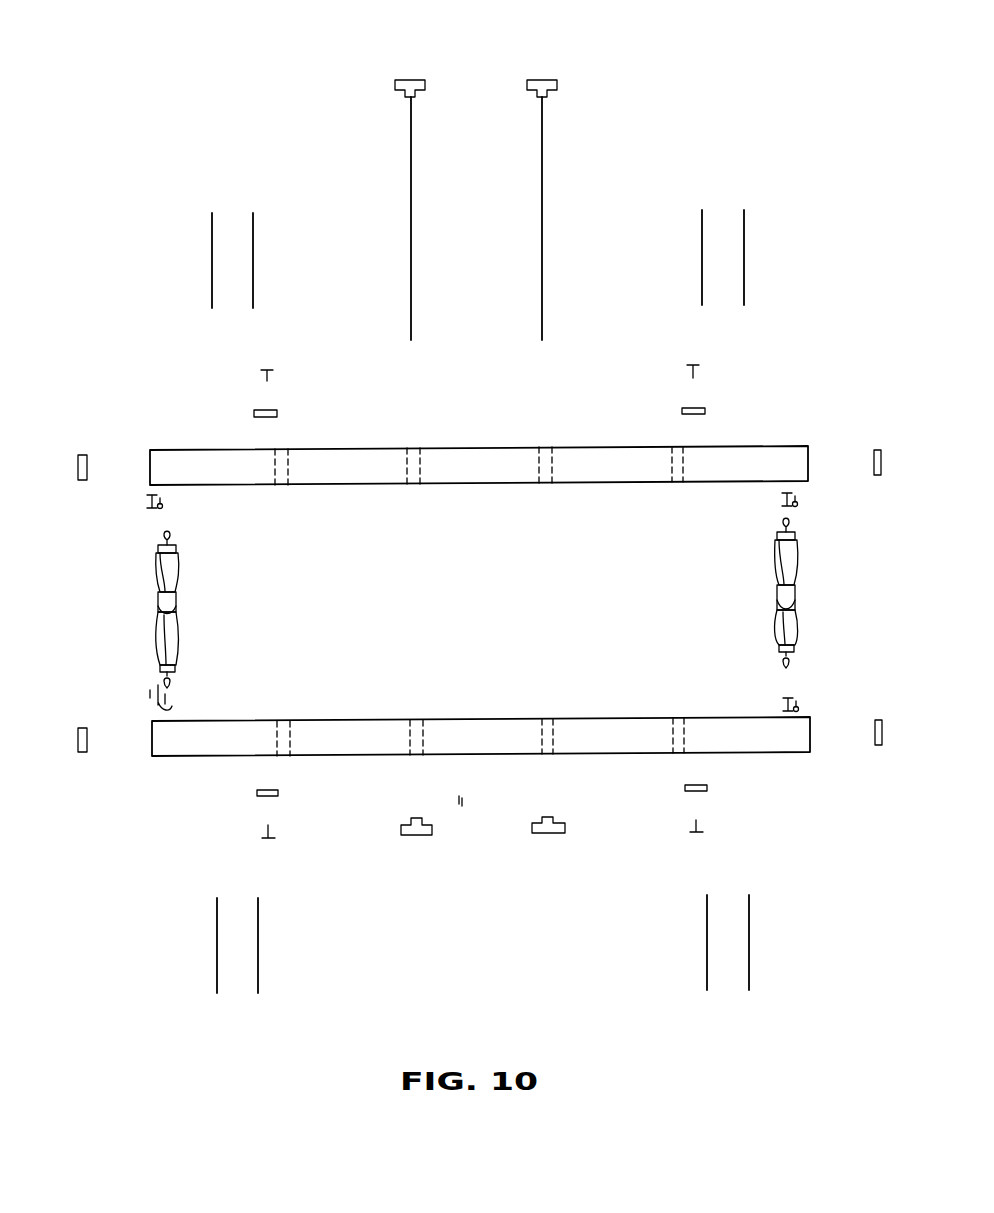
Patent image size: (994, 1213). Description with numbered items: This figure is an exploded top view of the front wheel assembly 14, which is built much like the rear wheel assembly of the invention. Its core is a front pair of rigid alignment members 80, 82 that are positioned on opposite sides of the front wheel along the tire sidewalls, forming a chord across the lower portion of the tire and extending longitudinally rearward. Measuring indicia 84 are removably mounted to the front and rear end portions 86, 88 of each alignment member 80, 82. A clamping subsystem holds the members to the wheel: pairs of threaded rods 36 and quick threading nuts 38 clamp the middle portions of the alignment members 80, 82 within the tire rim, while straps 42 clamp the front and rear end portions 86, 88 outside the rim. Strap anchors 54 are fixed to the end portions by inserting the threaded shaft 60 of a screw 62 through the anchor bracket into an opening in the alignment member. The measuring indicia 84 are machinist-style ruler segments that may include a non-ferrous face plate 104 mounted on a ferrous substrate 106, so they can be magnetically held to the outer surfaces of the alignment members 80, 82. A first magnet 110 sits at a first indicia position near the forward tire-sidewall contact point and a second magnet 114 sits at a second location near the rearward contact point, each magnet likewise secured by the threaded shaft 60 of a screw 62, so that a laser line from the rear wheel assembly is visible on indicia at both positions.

The front wheel assembly 14 is at (158, 86).
The threaded rods 36 is at (542, 222).
The quick threading nuts 38 is at (527, 93).
The straps 42 is at (137, 600).
The strap anchors 54 is at (163, 503).
The threaded shaft 60 is at (269, 380).
The screw 62 is at (264, 373).
The alignment member 80 is at (640, 720).
The alignment member 82 is at (615, 485).
The measuring indicia 84 is at (183, 258).
The front end portion 86 is at (754, 447).
The rear end portion 88 is at (215, 487).
The non-ferrous face plate 104 is at (707, 953).
The ferrous substrate 106 is at (749, 960).
The first magnet 110 is at (708, 788).
The second magnet 114 is at (279, 792).